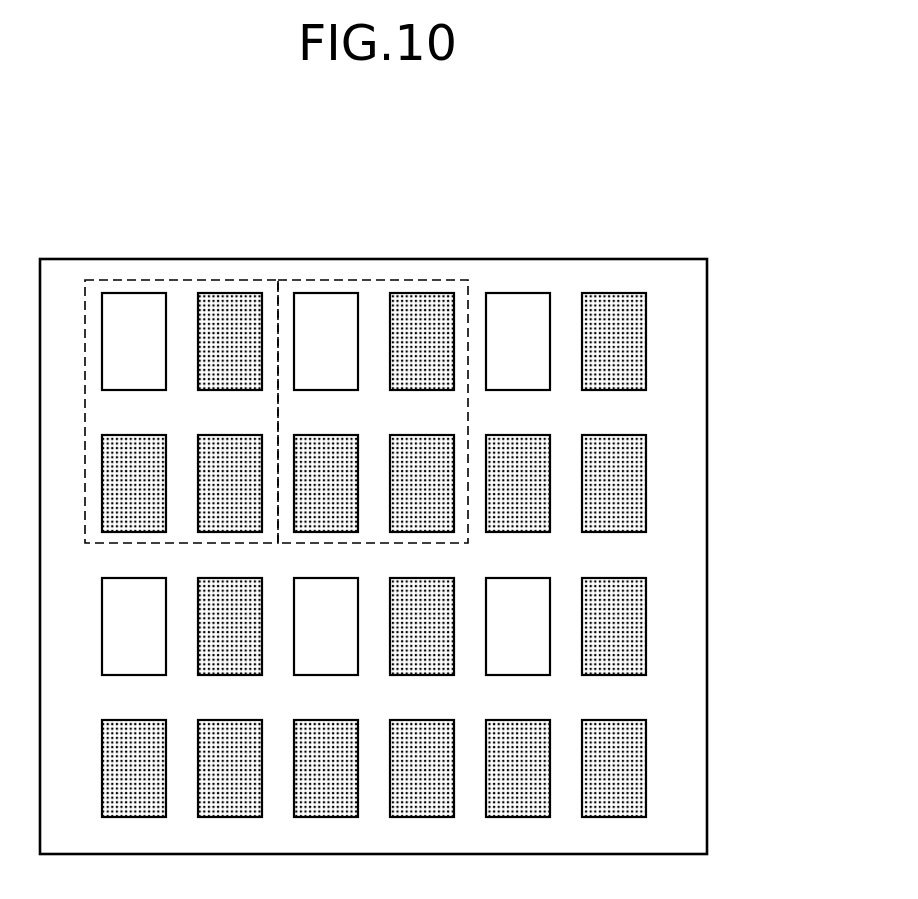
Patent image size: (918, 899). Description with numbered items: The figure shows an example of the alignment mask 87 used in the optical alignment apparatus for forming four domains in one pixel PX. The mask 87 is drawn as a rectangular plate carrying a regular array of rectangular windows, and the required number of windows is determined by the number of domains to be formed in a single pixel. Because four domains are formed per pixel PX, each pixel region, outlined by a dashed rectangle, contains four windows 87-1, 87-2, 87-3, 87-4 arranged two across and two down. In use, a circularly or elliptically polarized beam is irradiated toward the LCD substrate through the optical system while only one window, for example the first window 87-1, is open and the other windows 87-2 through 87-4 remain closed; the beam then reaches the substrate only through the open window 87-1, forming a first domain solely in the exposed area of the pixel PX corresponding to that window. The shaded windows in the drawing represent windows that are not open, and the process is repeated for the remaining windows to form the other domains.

The alignment mask 87 is at (700, 362).
The first window 87-1 is at (138, 389).
The second window 87-2 is at (232, 389).
The third window 87-3 is at (138, 531).
The fourth window 87-4 is at (232, 531).
The pixel PX is at (172, 282).